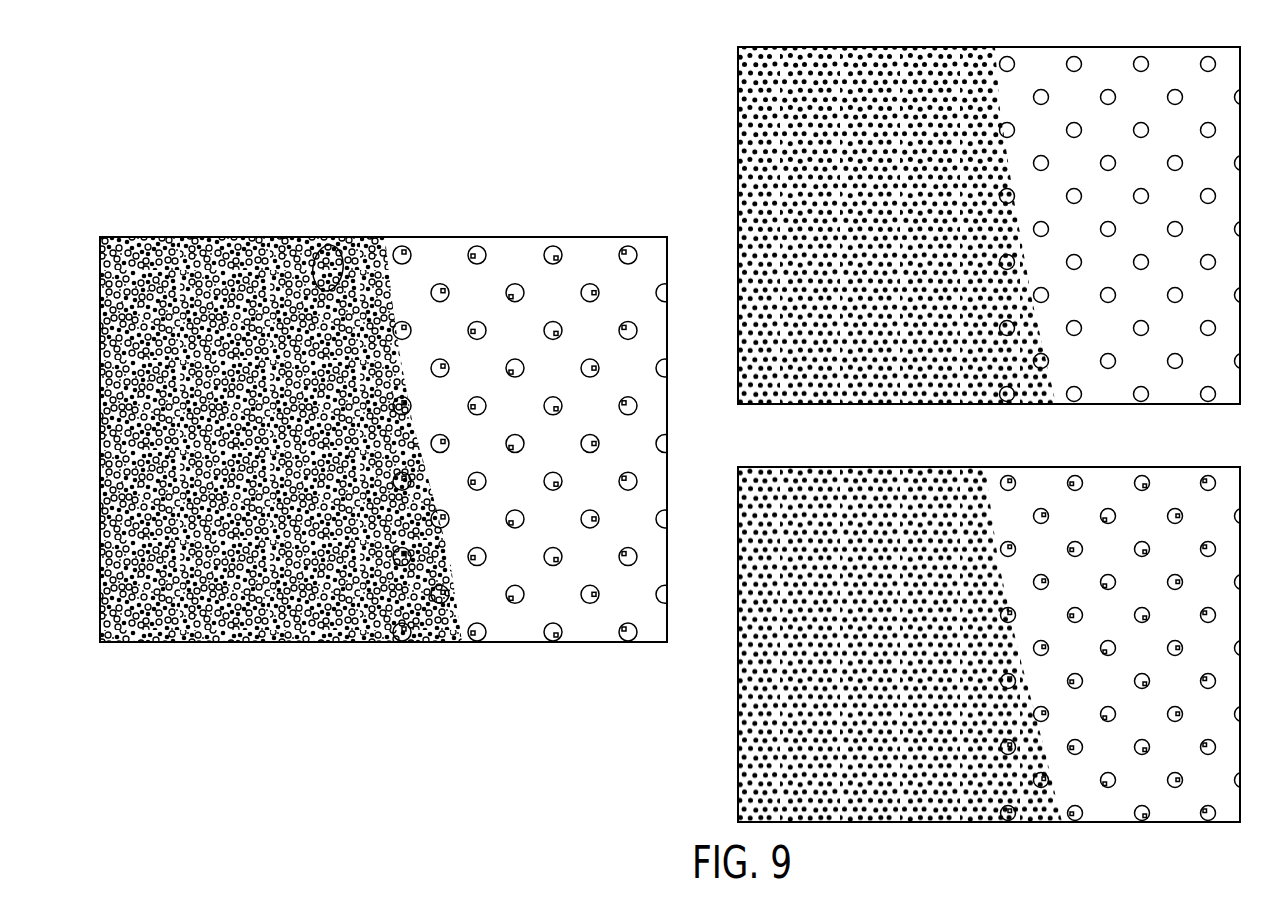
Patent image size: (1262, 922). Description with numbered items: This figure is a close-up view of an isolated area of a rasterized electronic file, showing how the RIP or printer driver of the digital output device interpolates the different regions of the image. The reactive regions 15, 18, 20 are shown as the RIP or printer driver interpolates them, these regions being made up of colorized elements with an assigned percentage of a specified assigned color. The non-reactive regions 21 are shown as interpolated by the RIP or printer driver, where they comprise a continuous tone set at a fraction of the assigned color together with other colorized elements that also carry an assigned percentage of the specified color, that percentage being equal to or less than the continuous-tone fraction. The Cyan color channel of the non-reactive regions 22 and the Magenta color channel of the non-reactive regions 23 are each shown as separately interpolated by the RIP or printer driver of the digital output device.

The RIP or printer driver interpolation of the reactive regions 15 is at (437, 287).
The RIP or printer driver interpolation of the reactive regions 18 is at (1012, 57).
The RIP or printer driver interpolation of the reactive regions 20 is at (1043, 507).
The RIP or printer driver interpolation of the non-reactive regions 21 is at (322, 255).
The RIP or printer driver interpolation of the Cyan color channel of the non-reactiv 22 is at (884, 68).
The RIP or printer driver interpolation of the Magenta color channel of the non-reac 23 is at (892, 488).